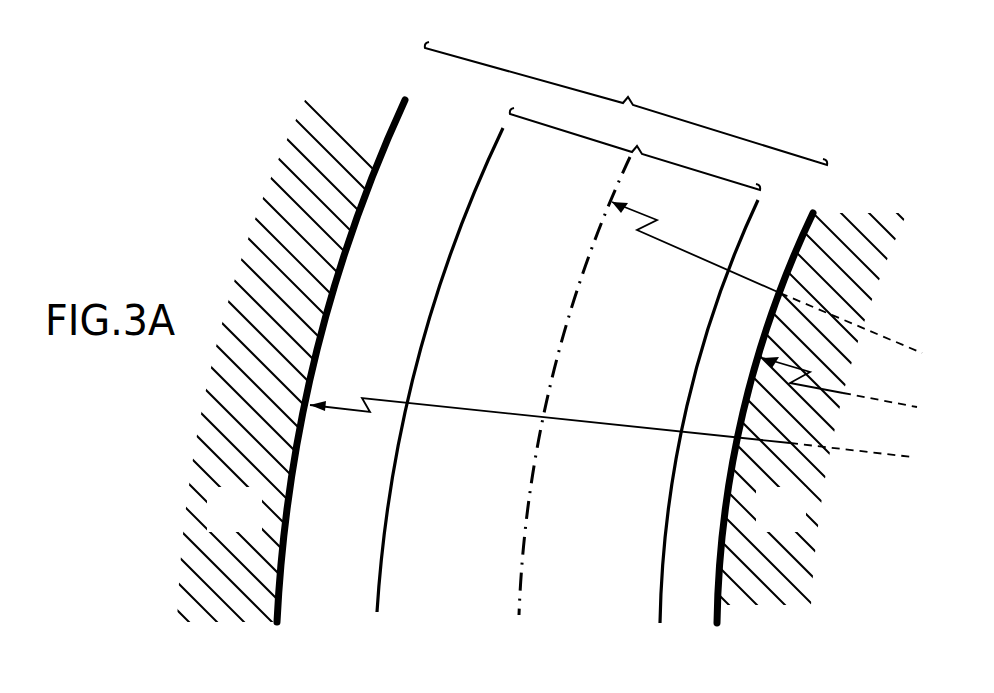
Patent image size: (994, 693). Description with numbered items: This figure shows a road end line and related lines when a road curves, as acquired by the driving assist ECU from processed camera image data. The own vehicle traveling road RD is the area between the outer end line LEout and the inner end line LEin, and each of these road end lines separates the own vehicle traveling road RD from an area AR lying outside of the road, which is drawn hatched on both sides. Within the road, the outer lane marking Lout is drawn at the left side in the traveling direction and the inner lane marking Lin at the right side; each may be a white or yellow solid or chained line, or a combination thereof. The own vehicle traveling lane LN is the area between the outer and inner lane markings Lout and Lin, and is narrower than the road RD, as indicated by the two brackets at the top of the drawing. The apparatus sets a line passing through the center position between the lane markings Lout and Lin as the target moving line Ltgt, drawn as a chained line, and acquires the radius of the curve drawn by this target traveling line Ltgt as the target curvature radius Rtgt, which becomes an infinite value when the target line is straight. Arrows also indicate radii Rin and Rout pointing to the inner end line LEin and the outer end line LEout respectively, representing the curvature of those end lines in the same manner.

The area outside of the own vehicle traveling road AR is at (497, 360).
The outer end line LEout is at (295, 468).
The outer lane marking Lout is at (382, 580).
The target moving line Ltgt is at (527, 512).
The inner lane marking Lin is at (660, 582).
The inner end line LEin is at (727, 482).
The own vehicle traveling road RD is at (626, 103).
The own vehicle traveling lane LN is at (635, 149).
The target curvature radius Rtgt is at (897, 345).
The inner edge curvature radius Rin is at (882, 400).
The outer edge curvature radius Rout is at (882, 455).